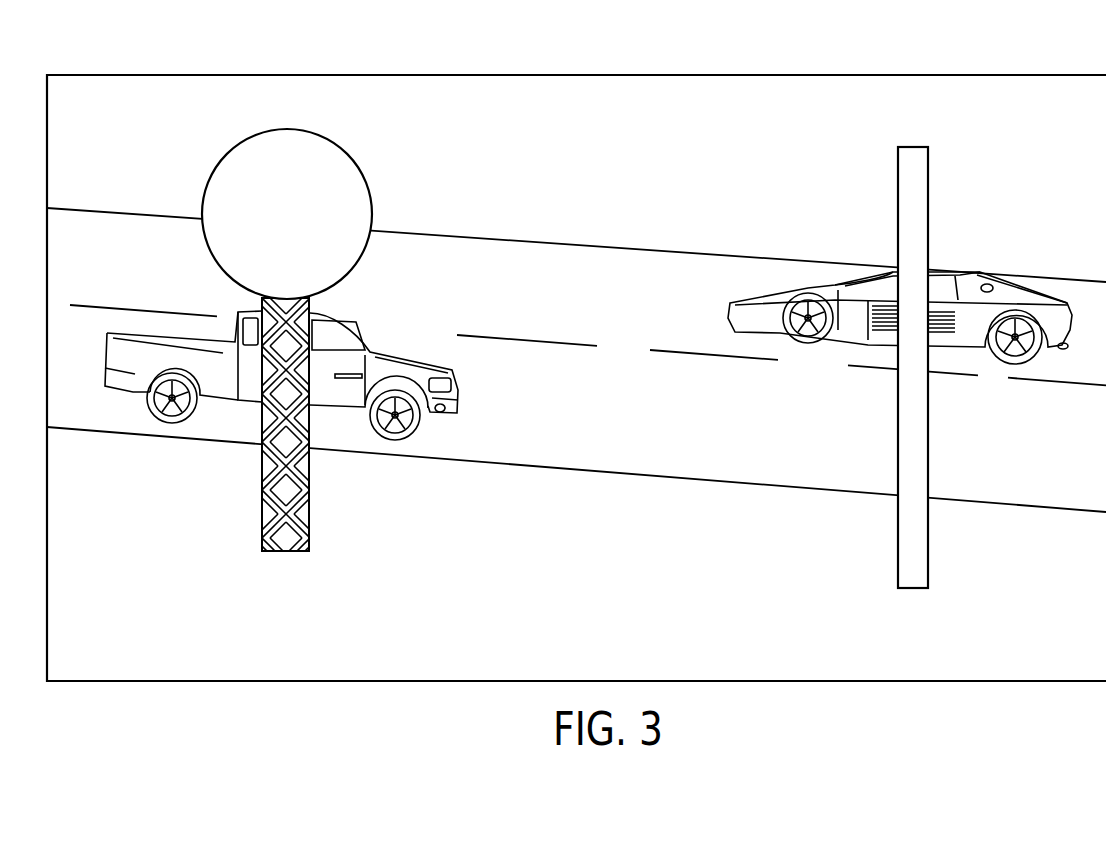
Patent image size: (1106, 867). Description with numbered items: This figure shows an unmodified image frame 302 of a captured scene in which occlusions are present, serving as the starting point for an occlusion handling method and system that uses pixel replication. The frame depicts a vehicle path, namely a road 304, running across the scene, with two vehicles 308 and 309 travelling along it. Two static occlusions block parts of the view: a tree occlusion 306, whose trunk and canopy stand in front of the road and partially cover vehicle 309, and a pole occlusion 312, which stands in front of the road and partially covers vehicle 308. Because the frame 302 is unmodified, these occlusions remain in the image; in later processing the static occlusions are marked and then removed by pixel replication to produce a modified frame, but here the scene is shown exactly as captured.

The unmodified image frame 302 is at (920, 74).
The road 304 is at (573, 243).
The tree occlusion 306 is at (310, 132).
The vehicle 308 is at (1028, 288).
The vehicle 309 is at (157, 420).
The pole occlusion 312 is at (897, 532).